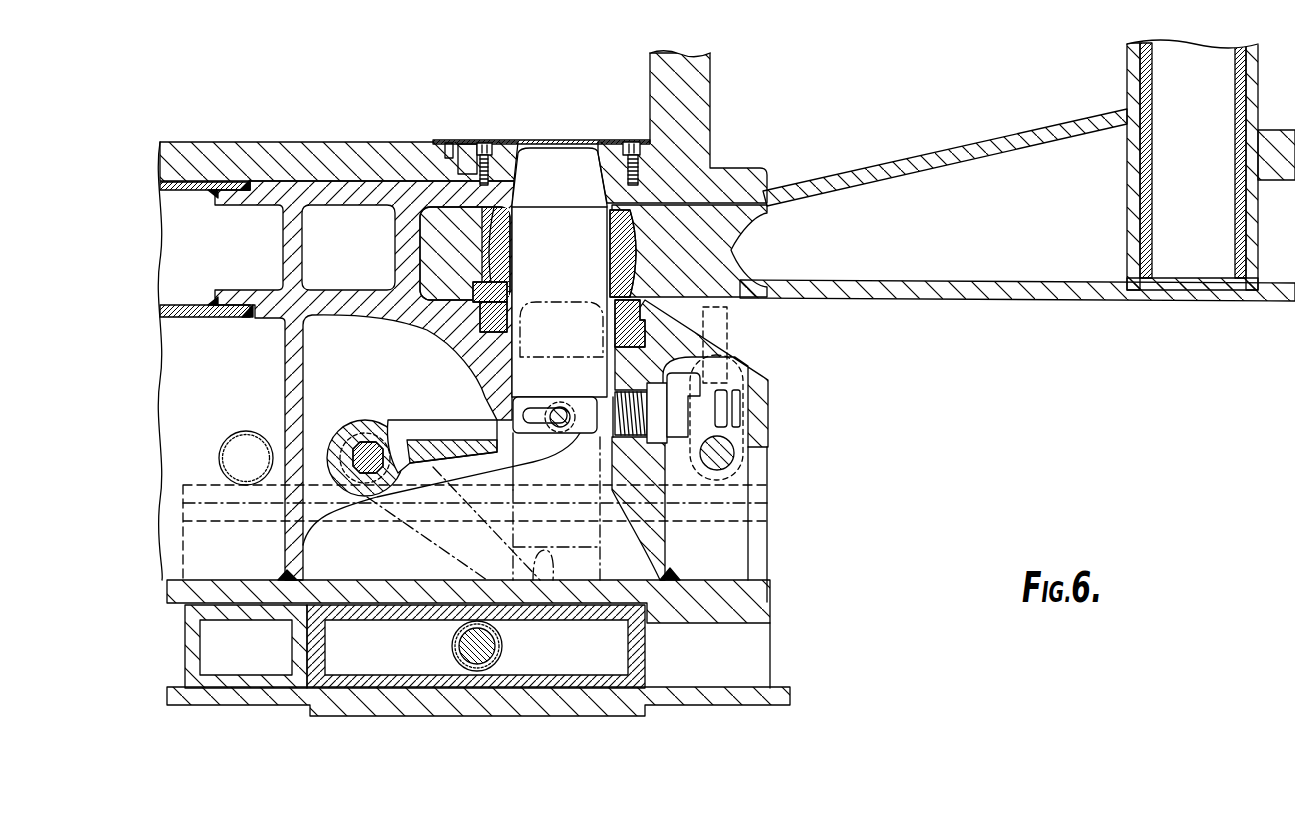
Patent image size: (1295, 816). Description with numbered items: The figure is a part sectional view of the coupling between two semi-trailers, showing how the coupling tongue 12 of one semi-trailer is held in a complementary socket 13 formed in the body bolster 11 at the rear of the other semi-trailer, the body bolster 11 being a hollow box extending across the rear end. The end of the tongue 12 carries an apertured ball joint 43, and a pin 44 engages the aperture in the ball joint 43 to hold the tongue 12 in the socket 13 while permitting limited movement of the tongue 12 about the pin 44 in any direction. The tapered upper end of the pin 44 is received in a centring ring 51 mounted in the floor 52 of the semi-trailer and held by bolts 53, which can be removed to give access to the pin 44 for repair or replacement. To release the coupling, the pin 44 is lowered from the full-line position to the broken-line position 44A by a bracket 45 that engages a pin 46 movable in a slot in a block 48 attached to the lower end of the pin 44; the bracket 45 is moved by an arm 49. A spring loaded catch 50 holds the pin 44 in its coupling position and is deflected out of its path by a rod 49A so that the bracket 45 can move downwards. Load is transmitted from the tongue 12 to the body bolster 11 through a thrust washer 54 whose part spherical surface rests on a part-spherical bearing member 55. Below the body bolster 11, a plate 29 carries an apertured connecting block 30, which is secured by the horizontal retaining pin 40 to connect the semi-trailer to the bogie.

The body bolster 11 is at (773, 595).
The coupling tongue 12 is at (961, 309).
The socket 13 is at (746, 164).
The plate 29 is at (788, 695).
The connecting block 30 is at (648, 660).
The retaining pin 40 is at (462, 646).
The ball joint 43 is at (480, 245).
The pin 44 is at (558, 160).
The lowered position of the pin 44A is at (577, 308).
The bracket 45 is at (440, 420).
The pin 46 is at (566, 413).
The block 48 is at (587, 427).
The arm 49 is at (342, 430).
The rod 49A is at (725, 455).
The spring loaded catch 50 is at (688, 425).
The centring ring 51 is at (510, 143).
The floor 52 is at (313, 150).
The bolts 53 is at (483, 145).
The thrust washer 54 is at (480, 313).
The bearing member 55 is at (493, 333).